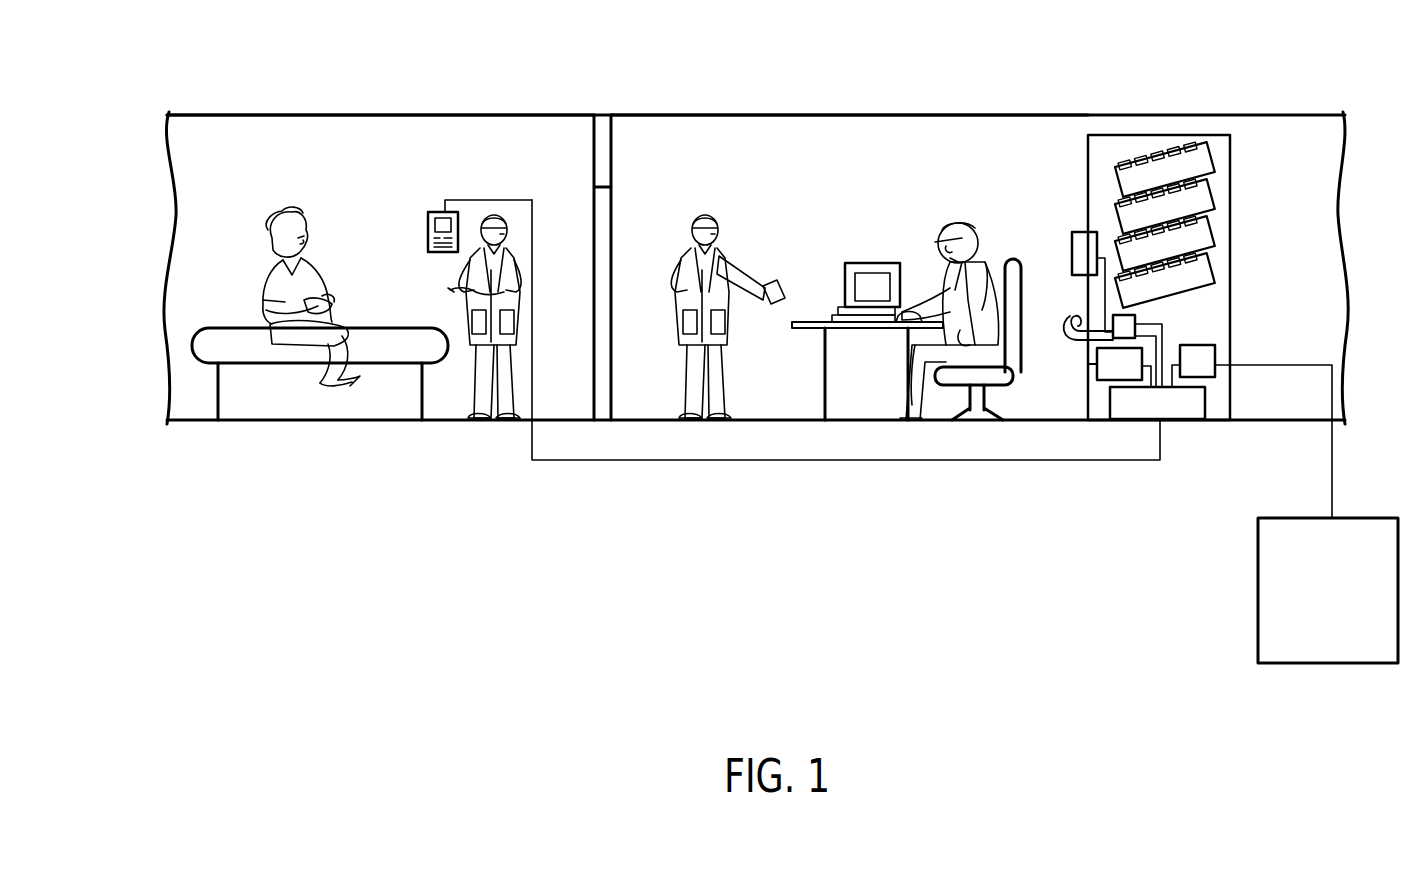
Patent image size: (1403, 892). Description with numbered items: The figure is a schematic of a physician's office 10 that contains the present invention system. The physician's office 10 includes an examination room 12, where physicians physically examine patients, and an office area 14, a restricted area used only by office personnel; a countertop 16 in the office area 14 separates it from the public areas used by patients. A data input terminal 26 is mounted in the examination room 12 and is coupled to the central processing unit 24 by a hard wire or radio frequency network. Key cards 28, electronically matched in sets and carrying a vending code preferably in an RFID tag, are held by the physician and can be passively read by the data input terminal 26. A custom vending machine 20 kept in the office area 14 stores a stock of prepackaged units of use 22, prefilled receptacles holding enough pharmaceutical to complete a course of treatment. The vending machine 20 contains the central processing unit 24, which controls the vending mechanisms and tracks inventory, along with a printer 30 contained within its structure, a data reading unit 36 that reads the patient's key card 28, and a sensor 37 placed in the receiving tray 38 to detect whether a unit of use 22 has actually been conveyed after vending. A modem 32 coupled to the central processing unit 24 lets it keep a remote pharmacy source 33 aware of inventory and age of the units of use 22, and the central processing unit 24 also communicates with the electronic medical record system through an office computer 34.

The physician's office 10 is at (950, 88).
The examination room 12 is at (414, 147).
The office area 14 is at (757, 144).
The countertop 16 is at (797, 333).
The vending machine 20 is at (1155, 272).
The prepackaged units of use 22 is at (1156, 157).
The central processing unit 24 is at (1190, 418).
The data input terminal 26 is at (428, 235).
The key cards 28 is at (458, 292).
The printer 30 is at (1142, 355).
The modem 32 is at (1215, 352).
The remote pharmacy source 33 is at (1258, 578).
The office computer 34 is at (869, 262).
The data reading unit 36 is at (1075, 233).
The sensor 37 is at (1135, 323).
The receiving tray 38 is at (1070, 340).